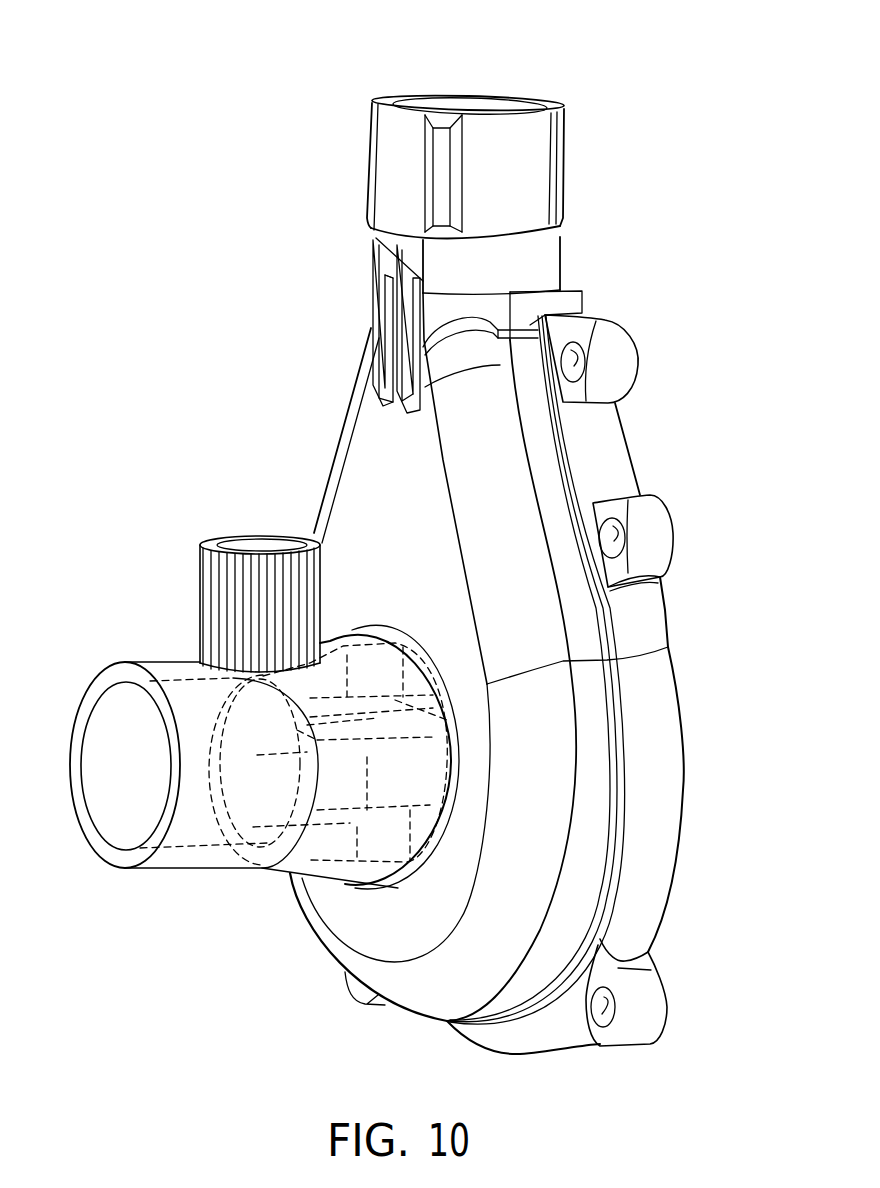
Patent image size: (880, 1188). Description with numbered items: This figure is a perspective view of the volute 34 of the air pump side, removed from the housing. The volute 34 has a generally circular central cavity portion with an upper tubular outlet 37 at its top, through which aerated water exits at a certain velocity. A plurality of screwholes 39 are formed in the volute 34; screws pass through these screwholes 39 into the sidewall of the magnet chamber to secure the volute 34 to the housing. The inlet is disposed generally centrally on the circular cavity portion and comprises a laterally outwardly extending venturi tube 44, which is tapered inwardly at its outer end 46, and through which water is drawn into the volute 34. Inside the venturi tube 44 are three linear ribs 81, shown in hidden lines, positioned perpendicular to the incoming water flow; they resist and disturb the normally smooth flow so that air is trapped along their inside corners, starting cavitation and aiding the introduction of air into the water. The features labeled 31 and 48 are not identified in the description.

The inlet opening 31 is at (84, 770).
The volute 34 is at (349, 421).
The upper tubular outlet 37 is at (460, 97).
The screwholes 39 is at (572, 360).
The venturi tube 44 is at (338, 640).
The outer end 46 is at (125, 860).
The knurled knob 48 is at (222, 578).
The linear ribs 81 is at (258, 764).